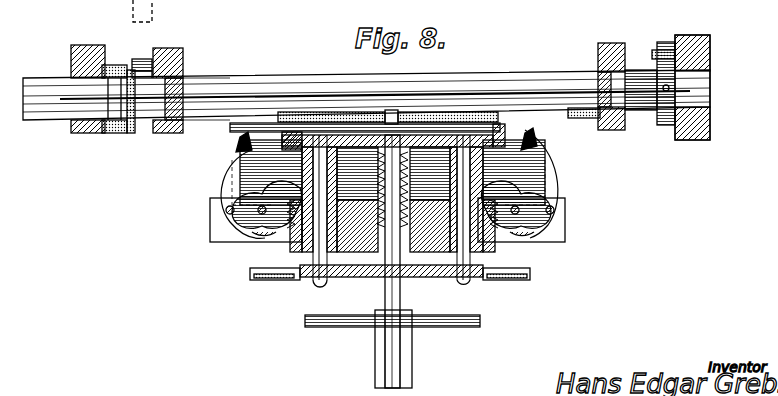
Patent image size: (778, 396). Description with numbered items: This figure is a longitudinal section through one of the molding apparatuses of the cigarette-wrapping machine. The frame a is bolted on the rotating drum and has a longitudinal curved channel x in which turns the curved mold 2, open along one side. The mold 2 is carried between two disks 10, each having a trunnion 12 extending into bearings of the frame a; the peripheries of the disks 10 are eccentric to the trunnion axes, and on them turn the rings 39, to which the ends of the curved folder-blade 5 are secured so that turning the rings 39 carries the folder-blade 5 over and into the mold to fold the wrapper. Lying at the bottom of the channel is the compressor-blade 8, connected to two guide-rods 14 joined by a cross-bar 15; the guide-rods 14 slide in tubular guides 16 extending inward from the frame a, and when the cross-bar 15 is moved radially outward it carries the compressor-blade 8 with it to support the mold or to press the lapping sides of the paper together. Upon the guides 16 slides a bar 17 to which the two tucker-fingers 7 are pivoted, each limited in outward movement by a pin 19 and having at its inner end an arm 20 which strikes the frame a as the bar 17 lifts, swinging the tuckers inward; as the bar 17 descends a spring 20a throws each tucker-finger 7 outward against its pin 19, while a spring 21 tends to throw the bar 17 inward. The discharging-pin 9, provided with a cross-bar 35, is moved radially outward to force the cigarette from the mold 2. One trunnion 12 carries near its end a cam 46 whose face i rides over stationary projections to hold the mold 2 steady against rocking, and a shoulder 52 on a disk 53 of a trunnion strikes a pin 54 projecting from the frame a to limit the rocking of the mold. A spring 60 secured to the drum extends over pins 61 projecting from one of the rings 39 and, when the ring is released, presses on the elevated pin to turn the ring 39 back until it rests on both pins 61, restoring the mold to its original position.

The curved mold 2 is at (340, 82).
The folder-blade 5 is at (432, 112).
The tucker-fingers 7 is at (222, 180).
The compressor-blade 8 is at (292, 132).
The discharging-pin 9 is at (385, 294).
The disks 10 is at (184, 72).
The trunnion 12 is at (150, 120).
The guide-rods 14 is at (252, 268).
The cross-bar 15 is at (435, 277).
The tubular guides 16 is at (340, 192).
The bar 17 is at (566, 230).
The pin 19 is at (226, 212).
The arm 20 is at (272, 203).
The spring 20a is at (588, 252).
The spring 21 is at (412, 182).
The cross-bar 35 is at (478, 322).
The rings 39 is at (178, 56).
The cam 46 is at (105, 133).
The shoulder 52 is at (666, 42).
The disk 53 is at (667, 125).
The pin 54 is at (682, 38).
The spring 60 is at (126, 11).
The pins 61 is at (143, 59).
The frame a is at (71, 62).
The face of the cam i is at (118, 135).
The longitudinal curved channel x is at (238, 138).